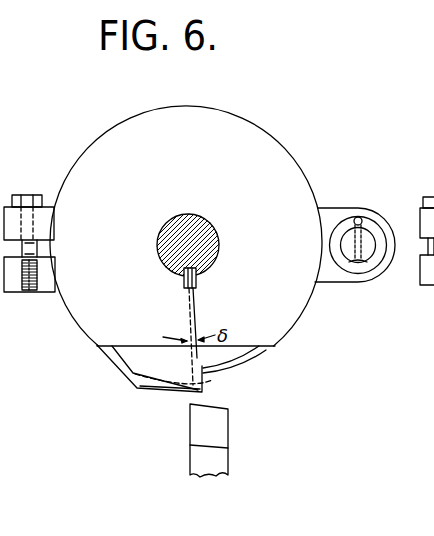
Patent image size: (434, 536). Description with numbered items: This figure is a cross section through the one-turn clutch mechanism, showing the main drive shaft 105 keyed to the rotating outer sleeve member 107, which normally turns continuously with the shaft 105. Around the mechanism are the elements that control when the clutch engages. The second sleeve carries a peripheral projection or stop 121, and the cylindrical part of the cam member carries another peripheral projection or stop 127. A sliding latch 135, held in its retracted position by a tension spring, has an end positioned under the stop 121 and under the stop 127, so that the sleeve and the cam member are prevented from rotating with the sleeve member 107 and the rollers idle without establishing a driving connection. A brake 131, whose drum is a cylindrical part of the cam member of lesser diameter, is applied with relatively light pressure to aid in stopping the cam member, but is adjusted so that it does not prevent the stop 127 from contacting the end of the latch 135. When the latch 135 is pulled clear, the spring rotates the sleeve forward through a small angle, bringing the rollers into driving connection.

The main drive shaft 105 is at (220, 258).
The outer sleeve member 107 is at (219, 130).
The stop 121 is at (165, 393).
The stop 127 is at (185, 399).
The brake 131 is at (47, 214).
The sliding latch 135 is at (218, 433).